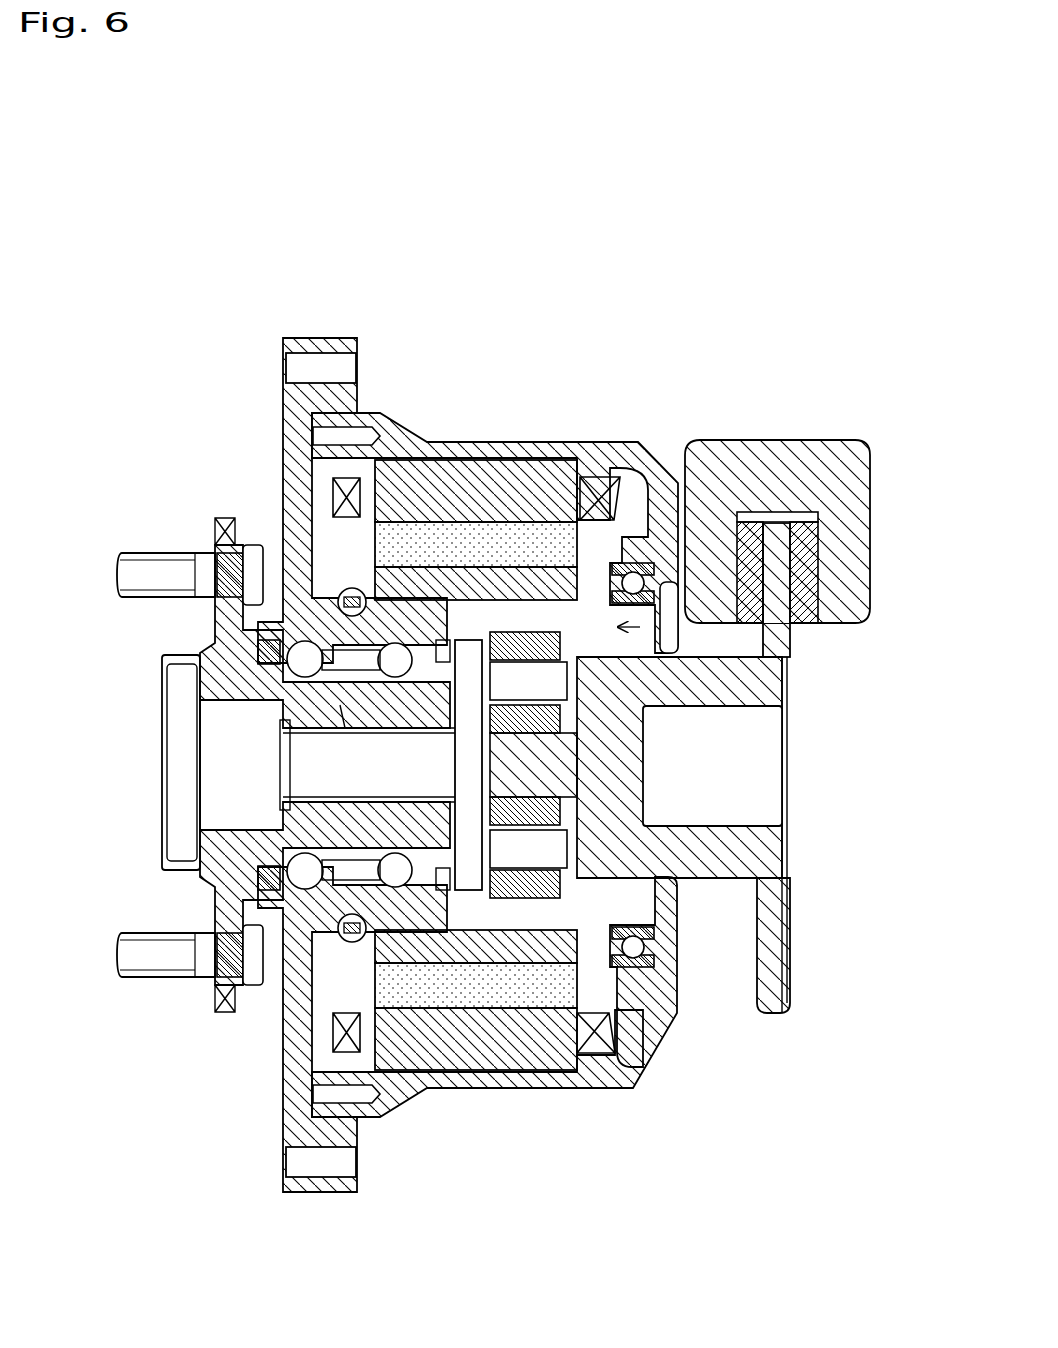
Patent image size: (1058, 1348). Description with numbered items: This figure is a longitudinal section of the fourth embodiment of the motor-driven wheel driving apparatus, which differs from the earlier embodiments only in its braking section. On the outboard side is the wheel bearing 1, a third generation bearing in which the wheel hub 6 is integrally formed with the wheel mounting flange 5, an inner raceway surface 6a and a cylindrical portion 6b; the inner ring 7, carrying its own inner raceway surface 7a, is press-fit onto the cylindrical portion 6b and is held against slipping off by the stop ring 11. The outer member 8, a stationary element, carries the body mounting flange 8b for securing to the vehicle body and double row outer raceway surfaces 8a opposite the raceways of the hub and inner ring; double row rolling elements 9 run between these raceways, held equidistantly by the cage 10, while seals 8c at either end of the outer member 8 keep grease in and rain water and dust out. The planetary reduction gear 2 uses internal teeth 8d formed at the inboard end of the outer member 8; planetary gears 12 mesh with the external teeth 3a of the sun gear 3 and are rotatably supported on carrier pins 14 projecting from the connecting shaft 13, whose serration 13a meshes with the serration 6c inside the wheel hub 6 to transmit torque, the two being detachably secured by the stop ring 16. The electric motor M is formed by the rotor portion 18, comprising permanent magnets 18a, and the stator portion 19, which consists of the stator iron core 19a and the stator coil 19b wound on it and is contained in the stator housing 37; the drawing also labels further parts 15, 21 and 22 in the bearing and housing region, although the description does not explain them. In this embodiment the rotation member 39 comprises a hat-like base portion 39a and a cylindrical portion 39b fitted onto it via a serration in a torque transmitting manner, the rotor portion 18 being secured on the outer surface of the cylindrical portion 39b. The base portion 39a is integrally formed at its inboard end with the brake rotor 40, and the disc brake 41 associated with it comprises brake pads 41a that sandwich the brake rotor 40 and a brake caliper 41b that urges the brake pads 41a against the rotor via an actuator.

The wheel bearing 1 is at (170, 526).
The planetary reduction gear 2 is at (574, 892).
The sun gear 3 is at (636, 767).
The external teeth 3a is at (575, 826).
The wheel mounting flange 5 is at (228, 530).
The wheel hub 6 is at (284, 765).
The inner raceway surface 6a is at (205, 698).
The cylindrical portion 6b is at (396, 675).
The serration 6c is at (330, 800).
The inner ring 7 is at (462, 892).
The inner raceway surface 7a is at (415, 928).
The outer member 8 is at (295, 580).
The outer raceway surfaces 8a is at (398, 643).
The body mounting flange 8b is at (300, 398).
The seals 8c is at (265, 878).
The internal teeth 8d is at (650, 477).
The rolling elements 9 is at (300, 868).
The cage 10 is at (360, 697).
The stop ring 11 is at (476, 706).
The planetary gears 12 is at (527, 800).
The connecting shaft 13 is at (287, 753).
The serration 13a is at (343, 712).
The carrier pins 14 is at (525, 680).
The bearing support 15 is at (575, 888).
The stop ring 16 is at (300, 740).
The rotor portion 18 is at (477, 700).
The permanent magnets 18a is at (408, 520).
The stator portion 19 is at (530, 709).
The stator iron core 19a is at (465, 470).
The stator coil 19b is at (628, 478).
The bearing 21 is at (637, 580).
The bolt 22 is at (333, 567).
The stator housing 37 is at (652, 453).
The rotation member 39 is at (813, 835).
The base portion 39a is at (762, 850).
The cylindrical portion 39b is at (740, 708).
The brake rotor 40 is at (772, 632).
The disc brake 41 is at (794, 485).
The brake pads 41a is at (805, 540).
The brake caliper 41b is at (860, 510).
The electric motor M is at (612, 382).